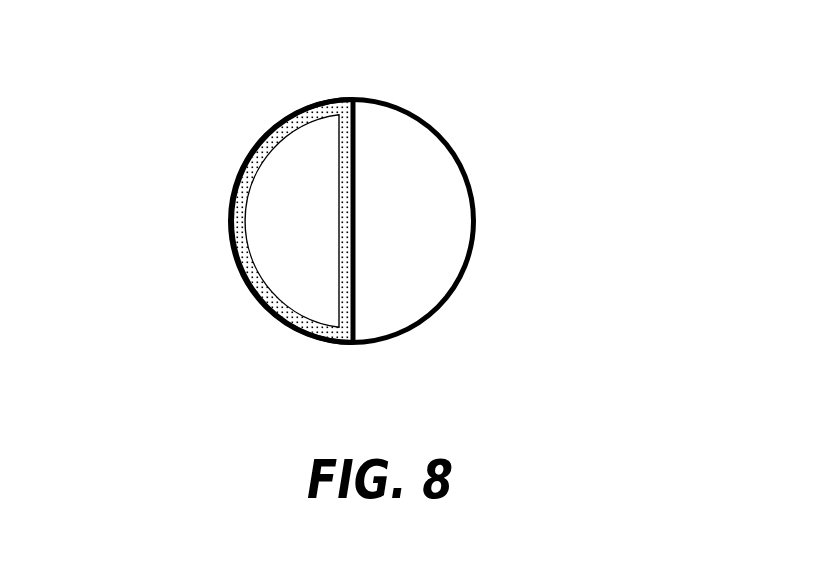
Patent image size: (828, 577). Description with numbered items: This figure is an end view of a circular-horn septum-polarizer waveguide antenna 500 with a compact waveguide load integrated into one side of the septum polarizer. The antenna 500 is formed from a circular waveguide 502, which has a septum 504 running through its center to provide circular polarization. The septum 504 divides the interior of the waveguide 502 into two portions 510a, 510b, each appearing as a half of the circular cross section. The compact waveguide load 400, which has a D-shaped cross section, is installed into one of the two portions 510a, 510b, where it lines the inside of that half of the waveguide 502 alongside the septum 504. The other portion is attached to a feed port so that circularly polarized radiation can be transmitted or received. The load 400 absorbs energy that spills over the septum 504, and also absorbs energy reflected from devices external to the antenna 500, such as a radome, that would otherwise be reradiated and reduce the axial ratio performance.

The antenna 500 is at (560, 113).
The compact waveguide load 400 is at (240, 198).
The septum 504 is at (352, 190).
The waveguide 502 is at (245, 280).
The first portion of the waveguide 510a is at (303, 247).
The second portion of the waveguide 510b is at (419, 247).